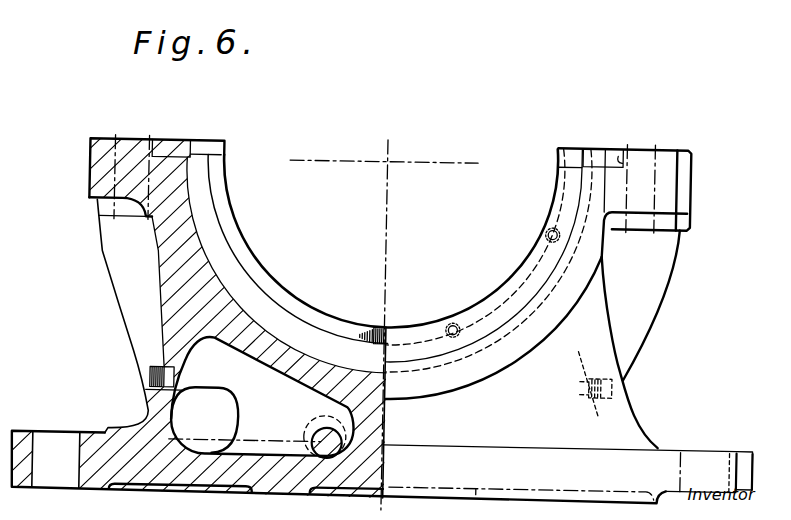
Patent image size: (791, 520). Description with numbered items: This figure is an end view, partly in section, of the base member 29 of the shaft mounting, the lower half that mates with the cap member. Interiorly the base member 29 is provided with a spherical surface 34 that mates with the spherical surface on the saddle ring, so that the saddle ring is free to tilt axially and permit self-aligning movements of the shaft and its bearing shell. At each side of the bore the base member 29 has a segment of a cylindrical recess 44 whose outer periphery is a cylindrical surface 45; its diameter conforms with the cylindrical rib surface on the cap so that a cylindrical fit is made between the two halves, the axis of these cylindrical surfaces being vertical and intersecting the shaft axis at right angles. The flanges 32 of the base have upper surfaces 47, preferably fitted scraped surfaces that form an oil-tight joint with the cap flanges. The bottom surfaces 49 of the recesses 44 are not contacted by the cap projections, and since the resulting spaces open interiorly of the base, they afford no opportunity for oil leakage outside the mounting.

The base member 29 is at (264, 271).
The flanges 32 is at (100, 169).
The spherical surface 34 is at (326, 318).
The cylindrical recess 44 is at (171, 150).
The cylindrical surface 45 is at (159, 150).
The upper surfaces 47 is at (100, 140).
The bottom surfaces 49 is at (191, 148).